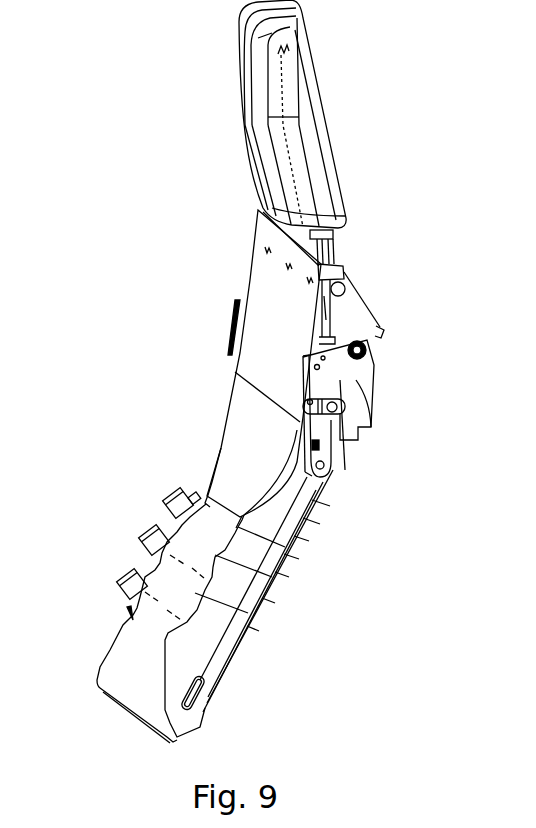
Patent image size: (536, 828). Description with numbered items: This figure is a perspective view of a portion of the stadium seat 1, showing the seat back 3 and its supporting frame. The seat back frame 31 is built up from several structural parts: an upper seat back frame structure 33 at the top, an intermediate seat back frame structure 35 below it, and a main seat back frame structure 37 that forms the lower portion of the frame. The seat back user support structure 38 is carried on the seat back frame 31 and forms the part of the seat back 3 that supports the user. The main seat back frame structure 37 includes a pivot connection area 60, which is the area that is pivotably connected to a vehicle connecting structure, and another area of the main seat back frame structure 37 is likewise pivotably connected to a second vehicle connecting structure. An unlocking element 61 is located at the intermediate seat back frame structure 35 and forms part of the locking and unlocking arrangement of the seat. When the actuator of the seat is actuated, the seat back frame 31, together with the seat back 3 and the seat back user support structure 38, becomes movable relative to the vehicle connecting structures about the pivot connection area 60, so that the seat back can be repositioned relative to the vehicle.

The stadium seat 1 is at (160, 178).
The seat back 3 is at (190, 358).
The upper seat back frame structure 33 is at (368, 300).
The unlocking element 61 is at (345, 405).
The seat back user support structure 38 is at (220, 427).
The intermediate seat back frame structure 35 is at (340, 440).
The seat back frame 31 is at (335, 513).
The main seat back frame structure 37 is at (268, 590).
The pivot connection area 60 is at (205, 703).